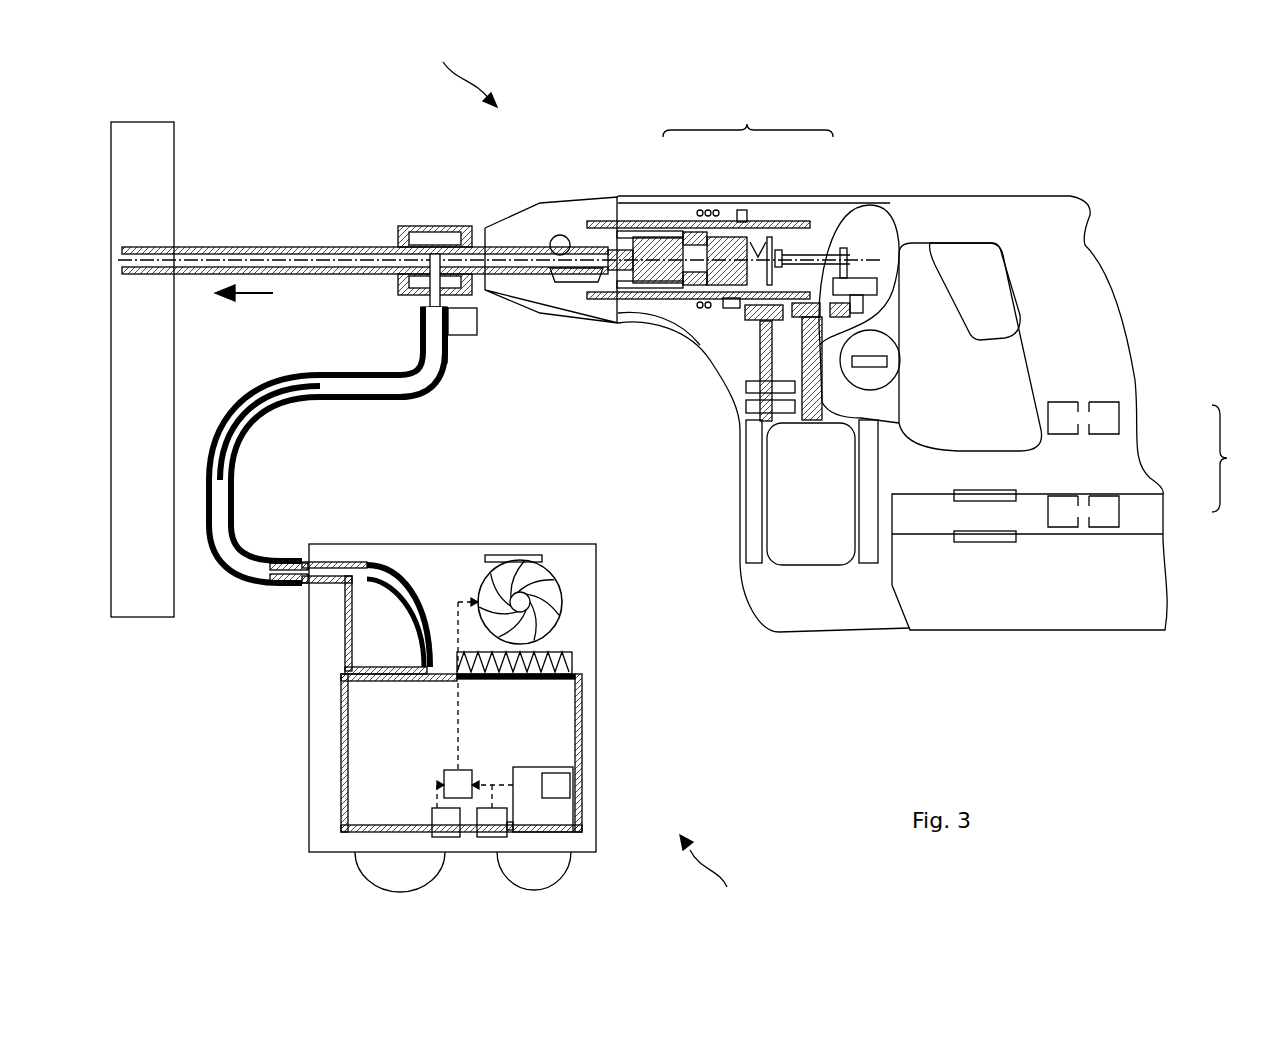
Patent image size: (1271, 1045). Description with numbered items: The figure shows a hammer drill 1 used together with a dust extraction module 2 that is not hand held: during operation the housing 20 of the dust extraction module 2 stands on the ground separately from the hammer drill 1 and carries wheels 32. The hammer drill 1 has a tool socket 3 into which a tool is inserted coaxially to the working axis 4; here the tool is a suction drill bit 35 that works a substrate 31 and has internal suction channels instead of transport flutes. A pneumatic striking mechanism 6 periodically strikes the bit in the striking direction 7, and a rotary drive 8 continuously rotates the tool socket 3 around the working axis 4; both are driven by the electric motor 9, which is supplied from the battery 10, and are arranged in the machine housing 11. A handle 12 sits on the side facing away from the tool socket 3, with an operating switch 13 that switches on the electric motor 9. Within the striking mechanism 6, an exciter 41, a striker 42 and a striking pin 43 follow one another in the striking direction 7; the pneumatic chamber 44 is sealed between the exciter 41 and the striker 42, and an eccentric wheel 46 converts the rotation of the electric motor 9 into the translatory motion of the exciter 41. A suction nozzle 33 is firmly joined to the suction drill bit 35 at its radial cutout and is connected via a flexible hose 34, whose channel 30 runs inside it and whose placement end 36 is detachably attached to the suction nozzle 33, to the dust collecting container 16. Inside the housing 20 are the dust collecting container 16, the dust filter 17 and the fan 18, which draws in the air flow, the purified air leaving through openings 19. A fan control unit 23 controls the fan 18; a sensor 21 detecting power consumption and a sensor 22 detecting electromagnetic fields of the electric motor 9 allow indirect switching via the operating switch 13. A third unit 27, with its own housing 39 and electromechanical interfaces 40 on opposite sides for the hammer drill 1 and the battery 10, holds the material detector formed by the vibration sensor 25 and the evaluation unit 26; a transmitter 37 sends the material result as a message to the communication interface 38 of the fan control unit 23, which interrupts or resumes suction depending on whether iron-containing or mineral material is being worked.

The hammer drill 1 is at (464, 66).
The dust extraction module 2 is at (712, 874).
The tool socket 3 is at (575, 228).
The working axis 4 is at (530, 255).
The pneumatic striking mechanism 6 is at (748, 116).
The striking direction 7 is at (244, 310).
The rotary drive 8 is at (805, 245).
The electric motor 9 is at (820, 455).
The battery 10 is at (1095, 592).
The machine housing 11 is at (622, 206).
The handle 12 is at (1077, 297).
The operating switch 13 is at (992, 272).
The dust collecting container 16 is at (397, 736).
The dust filter 17 is at (543, 655).
The fan 18 is at (527, 602).
The openings 19 is at (540, 560).
The housing 20 is at (330, 750).
The sensor 21 is at (437, 830).
The sensor 22 is at (495, 830).
The fan control unit 23 is at (463, 828).
The vibration sensor 25 is at (465, 335).
The evaluation unit 26 is at (523, 830).
The third unit 27 is at (1237, 458).
The channel 30 is at (233, 513).
The substrate 31 is at (158, 140).
The wheels 32 is at (380, 852).
The suction nozzle 33 is at (452, 226).
The flexible hose 34 is at (240, 490).
The suction drill bit 35 is at (325, 247).
The placement end 36 is at (430, 340).
The transmitter 37 is at (1065, 416).
The communication interface 38 is at (563, 790).
The housing 39 is at (1136, 518).
The electromechanical interfaces 40 is at (1010, 492).
The exciter 41 is at (790, 292).
The striker 42 is at (722, 247).
The striking pin 43 is at (655, 252).
The pneumatic chamber 44 is at (757, 243).
The eccentric wheel 46 is at (868, 284).